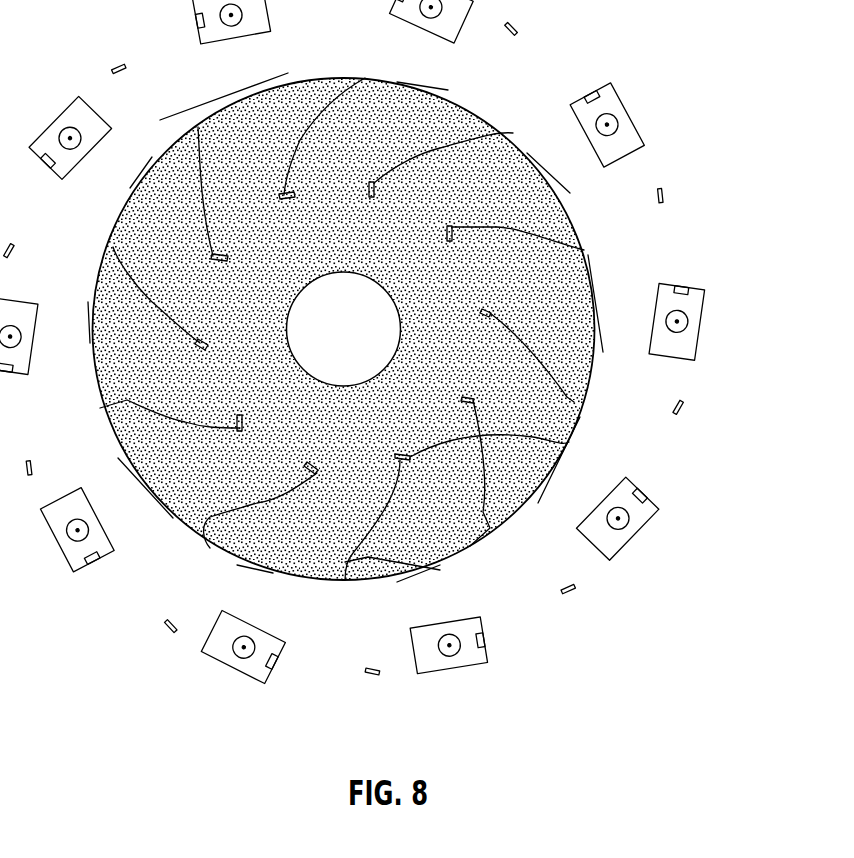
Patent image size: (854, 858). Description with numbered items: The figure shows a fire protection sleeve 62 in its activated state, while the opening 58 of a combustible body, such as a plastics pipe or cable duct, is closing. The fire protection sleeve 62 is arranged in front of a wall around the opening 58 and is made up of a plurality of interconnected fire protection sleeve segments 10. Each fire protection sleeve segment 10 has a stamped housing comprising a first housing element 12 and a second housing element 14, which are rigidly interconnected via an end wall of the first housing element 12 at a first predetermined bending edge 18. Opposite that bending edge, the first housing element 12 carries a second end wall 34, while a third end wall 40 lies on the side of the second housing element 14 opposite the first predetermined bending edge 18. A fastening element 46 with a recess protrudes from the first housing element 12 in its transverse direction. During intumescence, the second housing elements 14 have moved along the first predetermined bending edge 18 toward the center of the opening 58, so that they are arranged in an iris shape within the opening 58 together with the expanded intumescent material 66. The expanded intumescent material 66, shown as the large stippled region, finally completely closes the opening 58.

The fire protection sleeve segment 10 is at (374, 378).
The first housing element 12 is at (314, 376).
The second housing element 14 is at (427, 566).
The first predetermined bending edge 18 is at (348, 562).
The second end wall 34 is at (227, 535).
The third end wall 40 is at (563, 447).
The fastening element 46 is at (319, 648).
The opening 58 is at (203, 132).
The fire protection sleeve 62 is at (376, 337).
The expanded intumescent material 66 is at (137, 333).